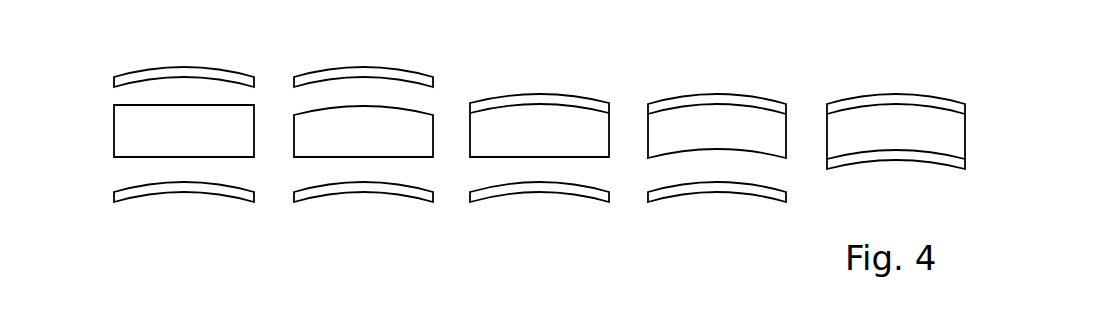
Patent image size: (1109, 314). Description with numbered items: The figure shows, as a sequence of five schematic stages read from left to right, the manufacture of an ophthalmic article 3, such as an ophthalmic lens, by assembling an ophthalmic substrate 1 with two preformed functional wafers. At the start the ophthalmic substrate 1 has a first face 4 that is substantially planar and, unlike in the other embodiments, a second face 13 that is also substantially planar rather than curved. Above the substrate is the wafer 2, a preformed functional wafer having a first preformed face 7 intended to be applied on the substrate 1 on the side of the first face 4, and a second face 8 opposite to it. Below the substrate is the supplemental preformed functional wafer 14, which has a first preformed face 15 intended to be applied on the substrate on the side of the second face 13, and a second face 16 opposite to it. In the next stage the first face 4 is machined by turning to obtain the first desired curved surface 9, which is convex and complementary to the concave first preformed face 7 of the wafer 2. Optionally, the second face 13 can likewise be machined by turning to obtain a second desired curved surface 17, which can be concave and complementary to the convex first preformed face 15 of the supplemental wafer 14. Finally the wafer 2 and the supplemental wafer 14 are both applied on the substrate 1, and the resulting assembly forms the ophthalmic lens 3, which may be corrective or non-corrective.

The ophthalmic substrate 1 is at (100, 132).
The wafer 2 is at (102, 82).
The ophthalmic article 3 is at (970, 123).
The first face 4 is at (187, 105).
The first preformed face 7 is at (152, 80).
The second face 8 is at (131, 71).
The first desired curved surface 9 is at (367, 104).
The second face 13 is at (125, 157).
The supplemental preformed functional wafer 14 is at (101, 200).
The first preformed face 15 is at (212, 180).
The second face 16 is at (147, 192).
The second desired curved surface 17 is at (712, 152).